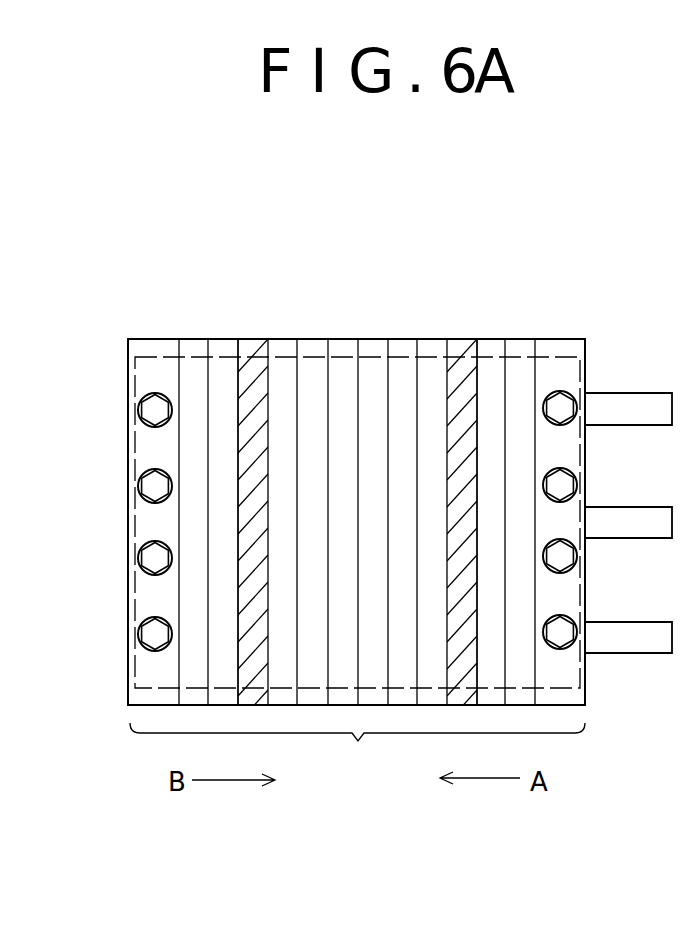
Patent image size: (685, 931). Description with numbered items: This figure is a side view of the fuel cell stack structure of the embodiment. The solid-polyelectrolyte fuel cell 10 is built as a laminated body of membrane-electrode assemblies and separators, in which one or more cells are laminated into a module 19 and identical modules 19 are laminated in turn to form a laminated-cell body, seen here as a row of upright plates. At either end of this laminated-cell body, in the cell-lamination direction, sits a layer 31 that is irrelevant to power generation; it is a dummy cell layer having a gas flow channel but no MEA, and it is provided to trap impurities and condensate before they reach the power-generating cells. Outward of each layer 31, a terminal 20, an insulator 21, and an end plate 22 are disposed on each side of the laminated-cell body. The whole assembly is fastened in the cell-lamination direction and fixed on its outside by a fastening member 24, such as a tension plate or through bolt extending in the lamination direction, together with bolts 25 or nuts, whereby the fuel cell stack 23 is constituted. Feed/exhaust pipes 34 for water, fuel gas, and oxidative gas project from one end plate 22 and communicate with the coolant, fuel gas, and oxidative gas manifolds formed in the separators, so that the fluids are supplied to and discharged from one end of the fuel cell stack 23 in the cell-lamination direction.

The solid-polyelectrolyte fuel cell 10 is at (483, 340).
The module 19 is at (427, 340).
The terminal 20 is at (224, 347).
The insulator 21 is at (195, 347).
The end plate 22 is at (160, 346).
The fuel cell stack 23 is at (357, 751).
The fastening member 24 is at (170, 347).
The bolts 25 is at (152, 410).
The layer irrelevant to power generation 31 is at (250, 346).
The feed/exhaust pipes 34 is at (622, 412).